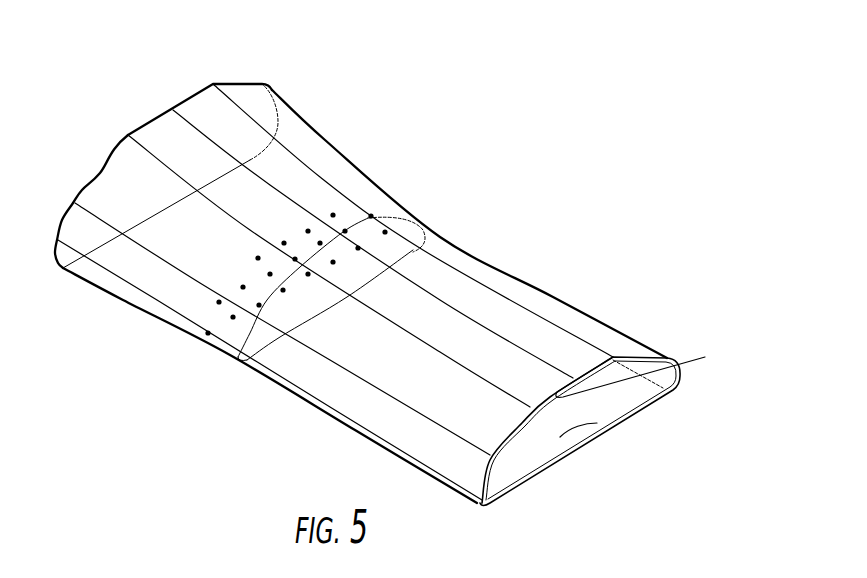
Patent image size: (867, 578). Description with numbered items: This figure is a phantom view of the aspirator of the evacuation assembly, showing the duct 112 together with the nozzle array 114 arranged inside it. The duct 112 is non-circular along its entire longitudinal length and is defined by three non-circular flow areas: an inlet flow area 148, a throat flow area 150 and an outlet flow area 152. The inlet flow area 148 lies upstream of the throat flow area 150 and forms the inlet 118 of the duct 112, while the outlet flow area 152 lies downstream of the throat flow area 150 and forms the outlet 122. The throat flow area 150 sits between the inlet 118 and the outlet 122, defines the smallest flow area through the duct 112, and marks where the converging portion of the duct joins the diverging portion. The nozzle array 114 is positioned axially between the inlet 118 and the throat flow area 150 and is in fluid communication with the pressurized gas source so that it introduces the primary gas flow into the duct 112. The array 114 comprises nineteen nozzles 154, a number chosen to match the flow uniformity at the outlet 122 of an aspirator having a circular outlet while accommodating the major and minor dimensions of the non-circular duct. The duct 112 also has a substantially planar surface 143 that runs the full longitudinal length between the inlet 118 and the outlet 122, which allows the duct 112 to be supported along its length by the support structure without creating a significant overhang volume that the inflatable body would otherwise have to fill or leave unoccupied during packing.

The duct 112 is at (163, 370).
The nozzle array 114 is at (280, 223).
The inlet 118 is at (80, 143).
The outlet 122 is at (630, 392).
The substantially planar surface 143 is at (578, 432).
The inlet flow area 148 is at (153, 118).
The throat flow area 150 is at (316, 252).
The outlet flow area 152 is at (705, 357).
The nozzles 154 is at (270, 276).